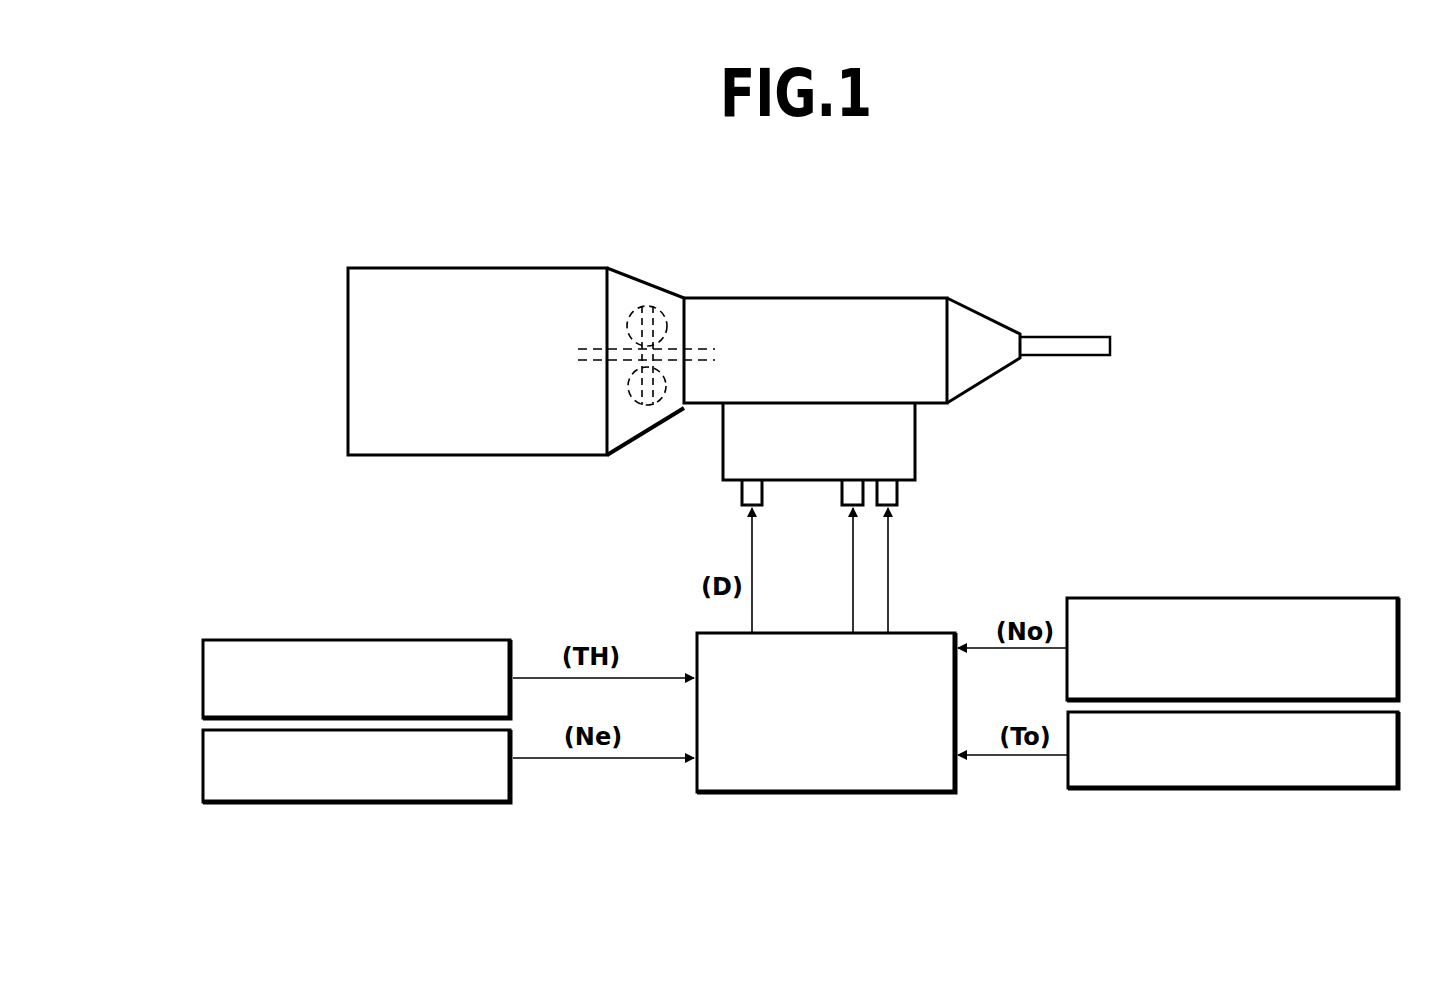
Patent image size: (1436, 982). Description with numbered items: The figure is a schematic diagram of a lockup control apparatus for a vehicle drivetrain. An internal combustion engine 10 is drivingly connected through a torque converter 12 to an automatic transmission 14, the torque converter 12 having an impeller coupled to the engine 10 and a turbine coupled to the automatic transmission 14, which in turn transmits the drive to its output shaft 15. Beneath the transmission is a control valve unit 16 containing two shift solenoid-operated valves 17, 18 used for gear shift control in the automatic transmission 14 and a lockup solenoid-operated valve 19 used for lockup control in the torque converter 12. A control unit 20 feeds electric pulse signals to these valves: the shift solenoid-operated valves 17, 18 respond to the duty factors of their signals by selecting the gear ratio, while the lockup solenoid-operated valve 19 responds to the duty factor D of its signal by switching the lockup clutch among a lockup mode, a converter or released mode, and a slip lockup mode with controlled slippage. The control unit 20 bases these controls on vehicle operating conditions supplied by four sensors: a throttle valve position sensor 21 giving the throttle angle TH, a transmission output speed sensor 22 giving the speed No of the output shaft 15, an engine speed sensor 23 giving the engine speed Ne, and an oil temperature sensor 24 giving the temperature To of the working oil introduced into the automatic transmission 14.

The internal combustion engine 10 is at (541, 267).
The torque converter 12 is at (652, 310).
The automatic transmission 14 is at (832, 297).
The output shaft 15 is at (1068, 336).
The control valve unit 16 is at (903, 445).
The shift solenoid-operated valve 17 is at (897, 490).
The shift solenoid-operated valve 18 is at (841, 498).
The lockup solenoid-operated valve 19 is at (740, 500).
The control unit 20 is at (932, 783).
The throttle valve position sensor 21 is at (224, 648).
The transmission output speed sensor 22 is at (1334, 598).
The engine speed sensor 23 is at (220, 796).
The oil temperature sensor 24 is at (1346, 778).